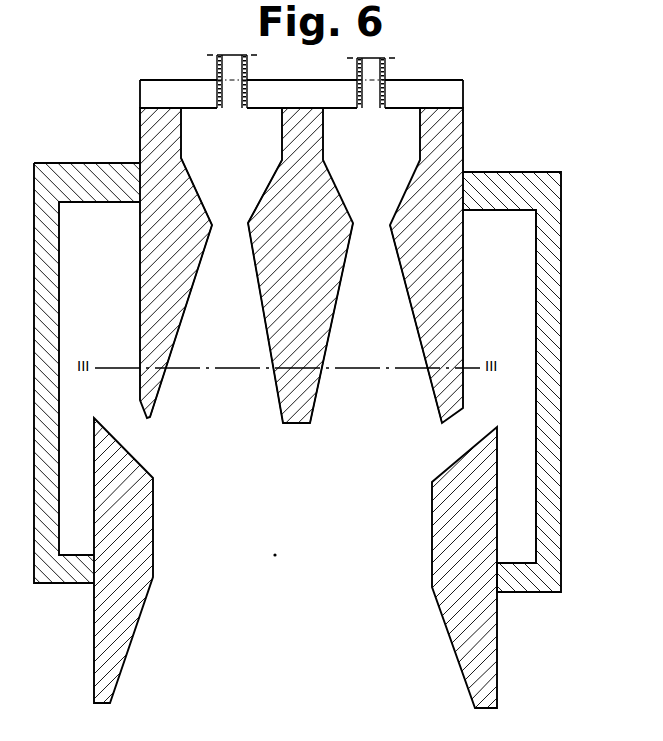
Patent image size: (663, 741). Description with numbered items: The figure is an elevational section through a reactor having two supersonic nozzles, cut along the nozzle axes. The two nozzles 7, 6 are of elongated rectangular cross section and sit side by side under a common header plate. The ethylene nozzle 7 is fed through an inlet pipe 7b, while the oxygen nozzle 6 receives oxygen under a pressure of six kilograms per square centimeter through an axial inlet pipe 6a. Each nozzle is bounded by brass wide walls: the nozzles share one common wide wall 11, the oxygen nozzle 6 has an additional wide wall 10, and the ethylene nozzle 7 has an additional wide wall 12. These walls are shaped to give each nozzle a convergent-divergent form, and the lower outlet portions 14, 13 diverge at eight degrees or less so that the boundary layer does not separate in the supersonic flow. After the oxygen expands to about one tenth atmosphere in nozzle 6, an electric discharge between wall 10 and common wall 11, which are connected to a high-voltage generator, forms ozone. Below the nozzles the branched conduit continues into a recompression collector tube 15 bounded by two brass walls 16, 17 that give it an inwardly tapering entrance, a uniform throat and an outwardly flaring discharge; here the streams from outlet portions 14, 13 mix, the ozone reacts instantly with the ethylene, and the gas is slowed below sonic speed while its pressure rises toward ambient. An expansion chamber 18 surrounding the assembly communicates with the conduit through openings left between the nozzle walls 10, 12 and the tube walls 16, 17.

The inlet pipe 7b is at (232, 55).
The axial inlet pipe 6a is at (371, 63).
The supersonic nozzle 7 is at (193, 133).
The common wide wall 11 is at (317, 132).
The supersonic nozzle 6 is at (407, 137).
The wide wall 10 is at (455, 157).
The wide wall 12 is at (190, 198).
The expansion chamber 18 is at (517, 283).
The outlet portion 14 is at (268, 335).
The outlet portion 13 is at (418, 335).
The recompression collector tube 15 is at (290, 558).
The brass wall 17 is at (102, 647).
The brass wall 16 is at (478, 630).